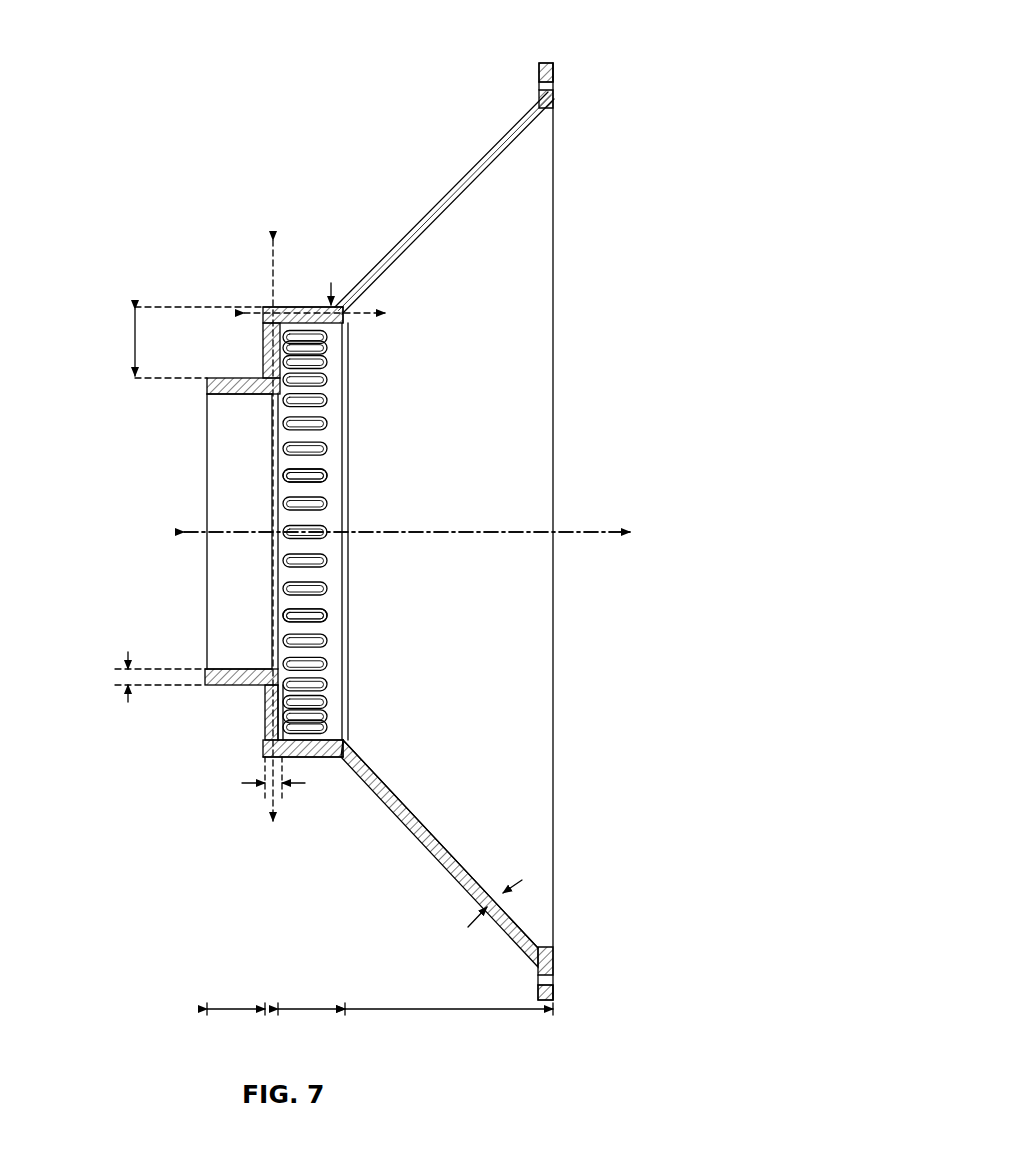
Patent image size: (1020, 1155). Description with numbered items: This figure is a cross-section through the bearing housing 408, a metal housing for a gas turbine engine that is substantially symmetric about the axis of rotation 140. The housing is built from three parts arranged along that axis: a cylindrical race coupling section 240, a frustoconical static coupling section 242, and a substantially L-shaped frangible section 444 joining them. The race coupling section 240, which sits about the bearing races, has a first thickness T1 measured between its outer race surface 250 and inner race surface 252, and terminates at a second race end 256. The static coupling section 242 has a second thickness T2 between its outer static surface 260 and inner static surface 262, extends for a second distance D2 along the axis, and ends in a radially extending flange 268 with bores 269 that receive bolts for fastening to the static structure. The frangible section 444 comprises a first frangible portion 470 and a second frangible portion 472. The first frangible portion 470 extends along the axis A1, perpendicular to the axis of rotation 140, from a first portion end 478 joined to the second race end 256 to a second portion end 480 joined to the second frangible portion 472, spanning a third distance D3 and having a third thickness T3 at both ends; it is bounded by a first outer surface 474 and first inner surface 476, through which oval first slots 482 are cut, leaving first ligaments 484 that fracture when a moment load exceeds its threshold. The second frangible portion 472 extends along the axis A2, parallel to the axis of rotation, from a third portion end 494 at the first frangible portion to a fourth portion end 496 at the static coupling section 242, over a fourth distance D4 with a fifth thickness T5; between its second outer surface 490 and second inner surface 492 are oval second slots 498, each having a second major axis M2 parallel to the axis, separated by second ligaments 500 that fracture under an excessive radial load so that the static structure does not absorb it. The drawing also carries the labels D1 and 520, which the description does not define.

The axis of rotation 140 is at (585, 528).
The race coupling section 240 is at (138, 507).
The static coupling section 242 is at (482, 147).
The outer race surface 250 is at (237, 672).
The inner race surface 252 is at (213, 670).
The second race end 256 is at (265, 396).
The outer static surface 260 is at (463, 888).
The inner static surface 262 is at (463, 857).
The flange 268 is at (556, 106).
The bores 269 is at (540, 72).
The bearing housing 408 is at (610, 46).
The frangible section 444 is at (312, 222).
The first frangible portion 470 is at (252, 757).
The second frangible portion 472 is at (326, 768).
The first outer surface 474 is at (265, 744).
The first inner surface 476 is at (320, 717).
The first portion end 478 is at (268, 376).
The second portion end 480 is at (262, 308).
The first slots 482 is at (290, 688).
The first ligaments 484 is at (280, 700).
The second outer surface 490 is at (302, 306).
The second inner surface 492 is at (332, 326).
The third portion end 494 is at (323, 736).
The fourth portion end 496 is at (345, 748).
The second slots 498 is at (327, 470).
The second ligaments 500 is at (290, 488).
The lower slot 520 is at (308, 628).
The axis A1 is at (270, 258).
The axis A2 is at (343, 318).
The second major axis M2 is at (307, 557).
The dimension D1 is at (240, 1012).
The second distance D2 is at (450, 1012).
The third distance D3 is at (133, 345).
The fourth distance D4 is at (320, 1012).
The first thickness T1 is at (122, 697).
The second thickness T2 is at (503, 891).
The third thickness T3 is at (240, 785).
The fifth thickness T5 is at (338, 285).